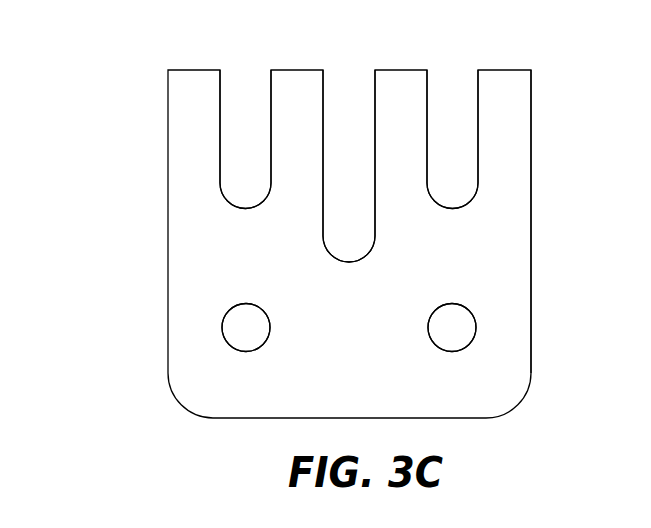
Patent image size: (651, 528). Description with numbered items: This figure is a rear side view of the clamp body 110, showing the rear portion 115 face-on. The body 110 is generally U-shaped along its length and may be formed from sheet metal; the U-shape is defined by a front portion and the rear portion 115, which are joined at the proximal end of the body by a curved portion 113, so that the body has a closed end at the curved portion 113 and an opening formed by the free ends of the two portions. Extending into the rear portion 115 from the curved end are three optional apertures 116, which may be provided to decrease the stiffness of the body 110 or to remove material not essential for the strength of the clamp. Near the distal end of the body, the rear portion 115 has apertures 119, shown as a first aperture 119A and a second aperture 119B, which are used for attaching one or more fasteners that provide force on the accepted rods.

The body 110 is at (168, 48).
The curved portion 113 is at (544, 82).
The rear portion 115 is at (371, 344).
The apertures 116 is at (438, 63).
The apertures 119 is at (88, 282).
The aperture 119A is at (476, 327).
The aperture 119B is at (223, 330).